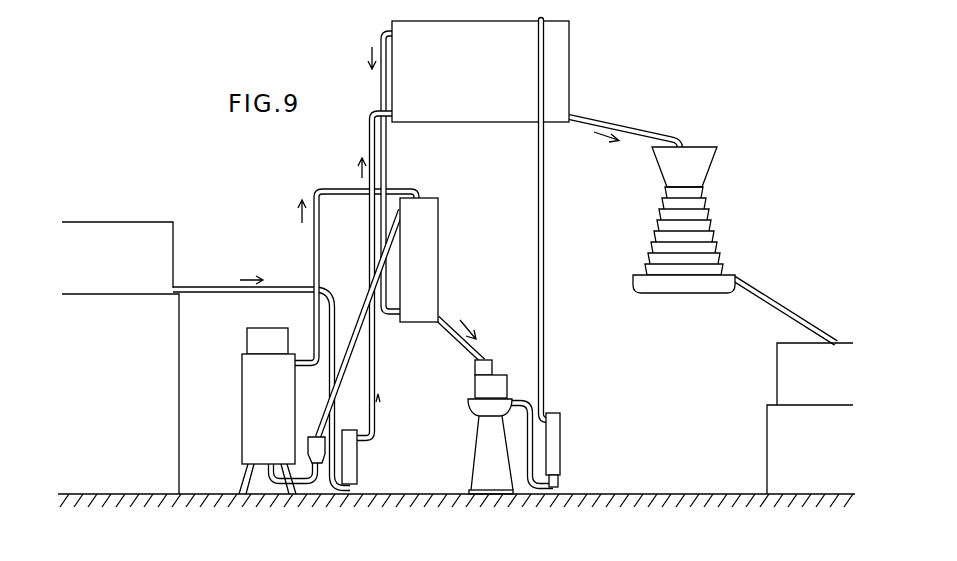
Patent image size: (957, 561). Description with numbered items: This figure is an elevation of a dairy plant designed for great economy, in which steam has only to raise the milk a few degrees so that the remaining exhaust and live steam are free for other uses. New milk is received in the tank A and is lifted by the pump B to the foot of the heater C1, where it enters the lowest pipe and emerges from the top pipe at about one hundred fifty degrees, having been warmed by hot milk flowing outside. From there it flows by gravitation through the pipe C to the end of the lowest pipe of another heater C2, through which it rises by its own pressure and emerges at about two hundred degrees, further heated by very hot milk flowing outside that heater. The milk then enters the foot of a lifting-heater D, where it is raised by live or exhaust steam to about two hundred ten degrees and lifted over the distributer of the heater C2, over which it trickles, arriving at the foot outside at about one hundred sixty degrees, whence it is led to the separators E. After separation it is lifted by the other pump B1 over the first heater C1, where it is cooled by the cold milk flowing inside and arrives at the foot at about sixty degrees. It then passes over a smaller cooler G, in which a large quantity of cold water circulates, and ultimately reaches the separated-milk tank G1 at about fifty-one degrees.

The tank A is at (120, 358).
The pump B is at (358, 457).
The pump B1 is at (566, 450).
The pipe C is at (381, 78).
The heater C1 is at (480, 71).
The heater C2 is at (419, 260).
The lifting-heater D is at (267, 411).
The separators E is at (475, 383).
The cooler G is at (684, 220).
The separated-milk tank G1 is at (810, 418).